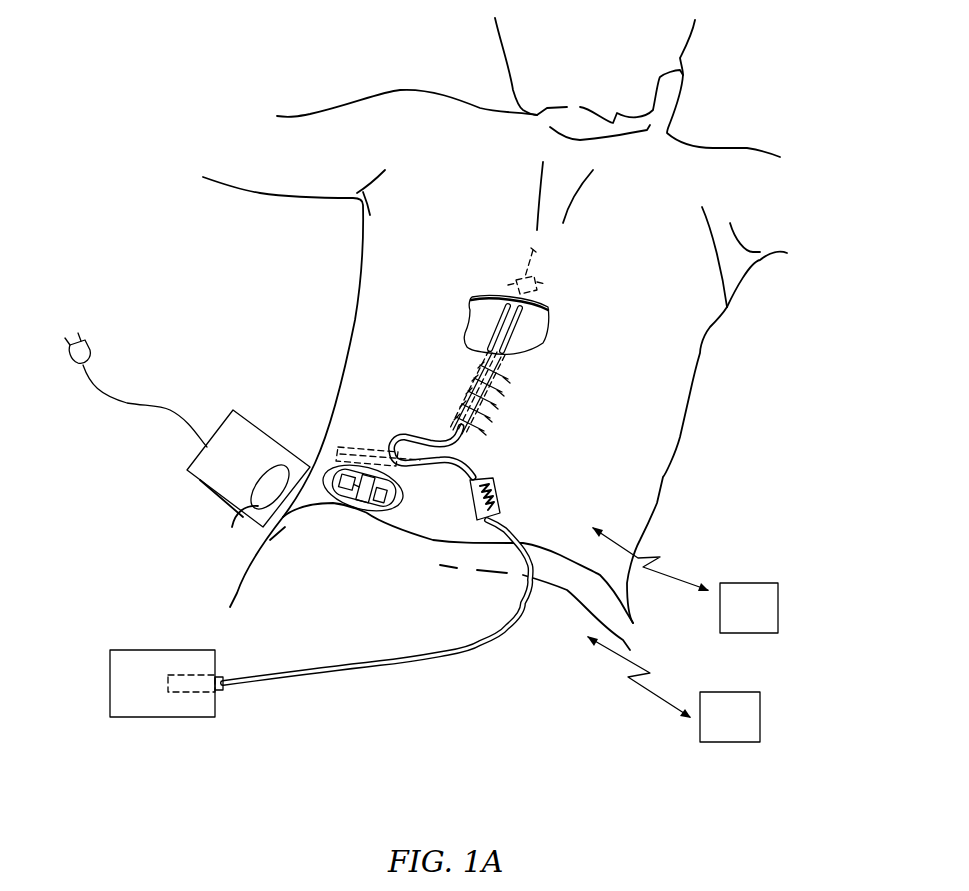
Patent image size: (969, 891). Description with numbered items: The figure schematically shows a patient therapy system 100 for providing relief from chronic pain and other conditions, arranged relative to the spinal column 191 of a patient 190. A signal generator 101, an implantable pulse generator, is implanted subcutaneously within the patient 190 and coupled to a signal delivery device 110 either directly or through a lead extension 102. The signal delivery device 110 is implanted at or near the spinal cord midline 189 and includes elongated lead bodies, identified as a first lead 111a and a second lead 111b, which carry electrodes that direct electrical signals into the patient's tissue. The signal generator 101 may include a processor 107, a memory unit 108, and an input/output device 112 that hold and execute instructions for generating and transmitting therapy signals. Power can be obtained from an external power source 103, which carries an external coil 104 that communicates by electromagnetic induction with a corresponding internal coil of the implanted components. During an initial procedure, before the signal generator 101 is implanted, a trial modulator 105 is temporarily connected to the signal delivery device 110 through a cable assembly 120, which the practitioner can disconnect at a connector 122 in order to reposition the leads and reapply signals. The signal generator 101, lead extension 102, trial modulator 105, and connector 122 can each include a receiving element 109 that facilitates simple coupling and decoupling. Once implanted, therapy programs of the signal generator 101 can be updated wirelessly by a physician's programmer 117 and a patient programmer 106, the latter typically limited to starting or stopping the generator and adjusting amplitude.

The patient therapy system 100 is at (195, 328).
The signal generator 101 is at (390, 487).
The lead extension 102 is at (426, 436).
The external power source 103 is at (248, 410).
The external coil 104 is at (245, 508).
The trial modulator 105 is at (152, 649).
The patient programmer 106 is at (756, 583).
The processor 107 is at (348, 496).
The memory unit 108 is at (387, 500).
The receiving element 109 is at (183, 673).
The signal delivery device 110 is at (468, 296).
The first lead 111a is at (492, 330).
The second lead 111b is at (520, 333).
The input/output device 112 is at (398, 503).
The physician's programmer 117 is at (740, 692).
The cable assembly 120 is at (442, 672).
The connector 122 is at (500, 490).
The spinal cord midline 189 is at (537, 253).
The patient 190 is at (665, 440).
The spinal column 191 is at (508, 400).